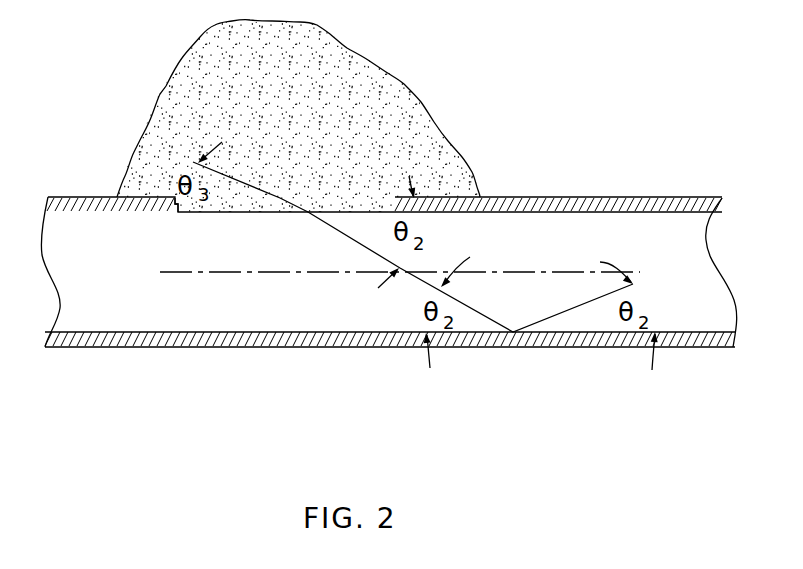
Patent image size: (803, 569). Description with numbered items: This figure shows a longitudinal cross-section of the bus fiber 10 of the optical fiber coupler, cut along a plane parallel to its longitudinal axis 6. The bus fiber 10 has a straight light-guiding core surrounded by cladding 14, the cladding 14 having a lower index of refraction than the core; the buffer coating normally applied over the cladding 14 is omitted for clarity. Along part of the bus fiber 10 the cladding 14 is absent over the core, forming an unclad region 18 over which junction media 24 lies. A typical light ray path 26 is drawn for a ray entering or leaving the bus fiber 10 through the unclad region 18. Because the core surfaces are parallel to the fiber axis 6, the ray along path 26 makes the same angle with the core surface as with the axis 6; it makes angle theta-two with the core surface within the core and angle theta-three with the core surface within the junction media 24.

The bus fiber 10 is at (634, 166).
The cladding 14 is at (130, 204).
The unclad region 18 is at (178, 214).
The junction media 24 is at (377, 87).
The light ray path 26 is at (332, 223).
The longitudinal axis of the bus fiber 6 is at (243, 273).